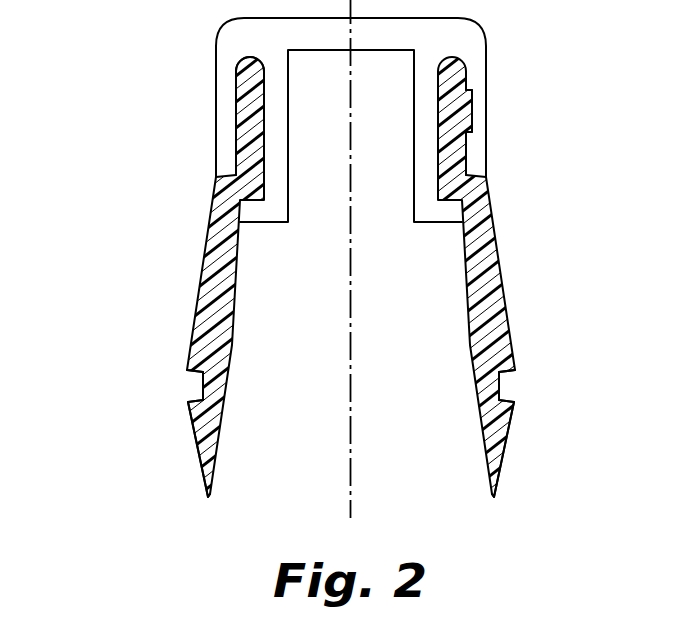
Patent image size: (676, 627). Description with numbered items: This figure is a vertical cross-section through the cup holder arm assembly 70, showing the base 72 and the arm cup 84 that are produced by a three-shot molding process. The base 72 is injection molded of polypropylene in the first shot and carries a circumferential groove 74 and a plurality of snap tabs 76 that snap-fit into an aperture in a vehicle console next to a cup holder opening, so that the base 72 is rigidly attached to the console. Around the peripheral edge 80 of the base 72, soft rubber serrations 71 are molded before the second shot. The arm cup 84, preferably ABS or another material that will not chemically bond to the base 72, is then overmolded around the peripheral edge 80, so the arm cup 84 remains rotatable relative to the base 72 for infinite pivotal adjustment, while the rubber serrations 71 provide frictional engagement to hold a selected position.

The cup holder arm assembly 70 is at (142, 320).
The rubber serrations 71 is at (470, 103).
The base 72 is at (203, 265).
The circumferential groove 74 is at (203, 385).
The snap tabs 76 is at (193, 430).
The peripheral edge 80 is at (235, 140).
The arm cup 84 is at (228, 63).